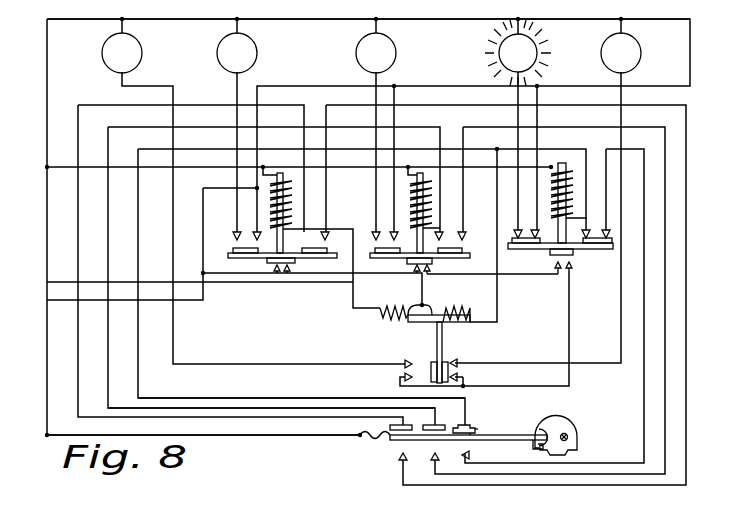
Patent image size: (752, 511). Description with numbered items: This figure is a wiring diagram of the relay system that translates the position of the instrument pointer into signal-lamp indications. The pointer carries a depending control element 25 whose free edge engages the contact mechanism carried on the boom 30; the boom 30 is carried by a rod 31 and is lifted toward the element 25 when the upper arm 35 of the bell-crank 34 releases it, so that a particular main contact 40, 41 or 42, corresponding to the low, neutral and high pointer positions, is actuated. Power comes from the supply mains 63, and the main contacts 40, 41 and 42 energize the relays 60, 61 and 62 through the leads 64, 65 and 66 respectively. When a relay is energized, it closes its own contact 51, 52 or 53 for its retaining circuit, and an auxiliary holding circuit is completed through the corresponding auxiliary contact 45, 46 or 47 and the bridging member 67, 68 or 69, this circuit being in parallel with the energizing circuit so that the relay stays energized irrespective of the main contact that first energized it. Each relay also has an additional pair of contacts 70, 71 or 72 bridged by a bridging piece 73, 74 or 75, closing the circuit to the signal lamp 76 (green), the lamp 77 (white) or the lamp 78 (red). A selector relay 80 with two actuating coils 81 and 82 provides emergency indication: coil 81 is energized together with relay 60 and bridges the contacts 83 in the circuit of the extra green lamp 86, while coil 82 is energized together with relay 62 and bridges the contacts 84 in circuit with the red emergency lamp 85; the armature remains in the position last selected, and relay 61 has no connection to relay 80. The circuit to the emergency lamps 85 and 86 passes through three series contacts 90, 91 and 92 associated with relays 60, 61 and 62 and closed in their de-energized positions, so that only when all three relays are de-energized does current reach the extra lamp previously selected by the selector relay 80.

The supply mains 63 is at (376, 40).
The extra green lamp 86 is at (134, 41).
The signal lamp 76 is at (254, 40).
The lamp 77 is at (397, 40).
The lamp 78 is at (545, 42).
The red emergency lamp 85 is at (640, 41).
The relay 60 is at (288, 165).
The relay 61 is at (428, 165).
The relay 62 is at (566, 168).
The pair of contacts 70 is at (240, 230).
The pair of contacts 71 is at (378, 230).
The pair of contacts 72 is at (522, 230).
The contact 51 is at (323, 240).
The contact 52 is at (452, 236).
The contact 53 is at (596, 234).
The bridging piece 73 is at (240, 259).
The bridging member 67 is at (320, 259).
The bridging piece 74 is at (388, 259).
The bridging member 68 is at (465, 256).
The bridging piece 75 is at (518, 250).
The bridging member 69 is at (596, 250).
The contact 90 is at (275, 274).
The contact 91 is at (424, 275).
The contact 92 is at (558, 275).
The selector relay 80 is at (433, 323).
The actuating coil 81 is at (380, 316).
The actuating coil 82 is at (460, 324).
The pair of contacts 83 is at (404, 373).
The pair of contacts 84 is at (458, 374).
The lead 66 is at (309, 397).
The lead 64 is at (320, 418).
The lead 65 is at (282, 417).
The contact 40 is at (392, 426).
The contact 41 is at (446, 422).
The contact 42 is at (478, 429).
The control element 25 is at (415, 442).
The boom 30 is at (462, 441).
The auxiliary contact 45 is at (398, 458).
The auxiliary contact 46 is at (431, 458).
The auxiliary contact 47 is at (470, 455).
The rod 31 is at (531, 445).
The upper arm 35 is at (552, 416).
The bell-crank 34 is at (570, 445).